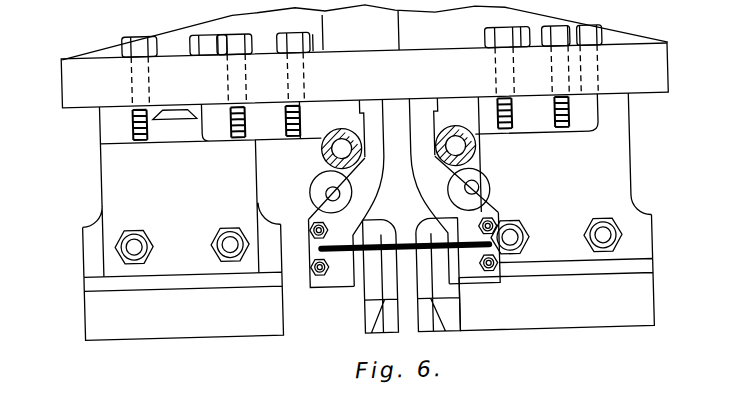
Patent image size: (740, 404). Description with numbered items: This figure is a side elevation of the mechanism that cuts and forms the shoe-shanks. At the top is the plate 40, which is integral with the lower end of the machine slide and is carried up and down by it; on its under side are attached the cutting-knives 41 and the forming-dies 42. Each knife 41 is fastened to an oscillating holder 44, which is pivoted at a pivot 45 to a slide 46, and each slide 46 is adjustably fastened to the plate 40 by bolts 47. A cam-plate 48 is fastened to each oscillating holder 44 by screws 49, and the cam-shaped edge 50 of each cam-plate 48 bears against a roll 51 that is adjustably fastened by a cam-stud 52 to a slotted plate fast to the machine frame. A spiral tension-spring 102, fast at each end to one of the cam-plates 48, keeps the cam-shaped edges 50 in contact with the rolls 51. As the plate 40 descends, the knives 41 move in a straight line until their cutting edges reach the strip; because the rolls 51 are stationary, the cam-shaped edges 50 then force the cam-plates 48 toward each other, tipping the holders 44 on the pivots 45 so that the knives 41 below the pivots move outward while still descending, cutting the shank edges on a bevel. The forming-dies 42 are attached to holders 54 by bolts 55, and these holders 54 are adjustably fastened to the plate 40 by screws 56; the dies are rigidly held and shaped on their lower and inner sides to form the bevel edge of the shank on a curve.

The plate 40 is at (365, 82).
The cutting-knives 41 is at (446, 313).
The forming-dies 42 is at (369, 299).
The oscillating holder 44 is at (320, 196).
The pivot 45 is at (476, 192).
The slide 46 is at (590, 125).
The bolts 47 is at (318, 36).
The cam-plate 48 is at (403, 221).
The screws 49 is at (318, 272).
The cam-shaped edge 50 is at (362, 128).
The roll 51 is at (468, 131).
The cam-stud 52 is at (459, 130).
The holders 54 is at (114, 114).
The bolts 55 is at (212, 243).
The screws 56 is at (141, 31).
The spiral tension-spring 102 is at (402, 238).